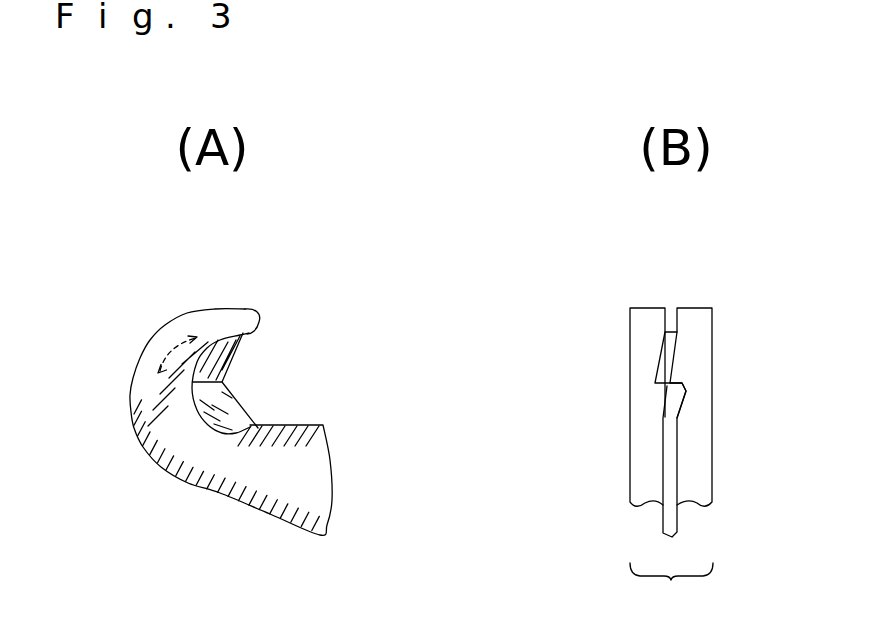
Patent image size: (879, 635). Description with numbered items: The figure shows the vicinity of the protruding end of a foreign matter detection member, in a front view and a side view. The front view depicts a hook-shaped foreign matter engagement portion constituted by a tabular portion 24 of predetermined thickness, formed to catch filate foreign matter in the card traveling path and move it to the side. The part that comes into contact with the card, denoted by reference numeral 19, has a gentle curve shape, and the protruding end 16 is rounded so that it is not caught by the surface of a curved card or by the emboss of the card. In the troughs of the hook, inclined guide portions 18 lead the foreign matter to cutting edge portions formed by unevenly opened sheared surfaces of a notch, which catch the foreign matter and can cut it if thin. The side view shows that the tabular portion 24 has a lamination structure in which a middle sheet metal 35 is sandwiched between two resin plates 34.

The protruding end 16 is at (253, 323).
The guide portion 18 is at (250, 340).
The part which comes into contact with the card 19 is at (249, 303).
The resin plate 34 is at (632, 308).
The middle sheet metal 35 is at (670, 330).
The tabular portion 24 is at (671, 591).